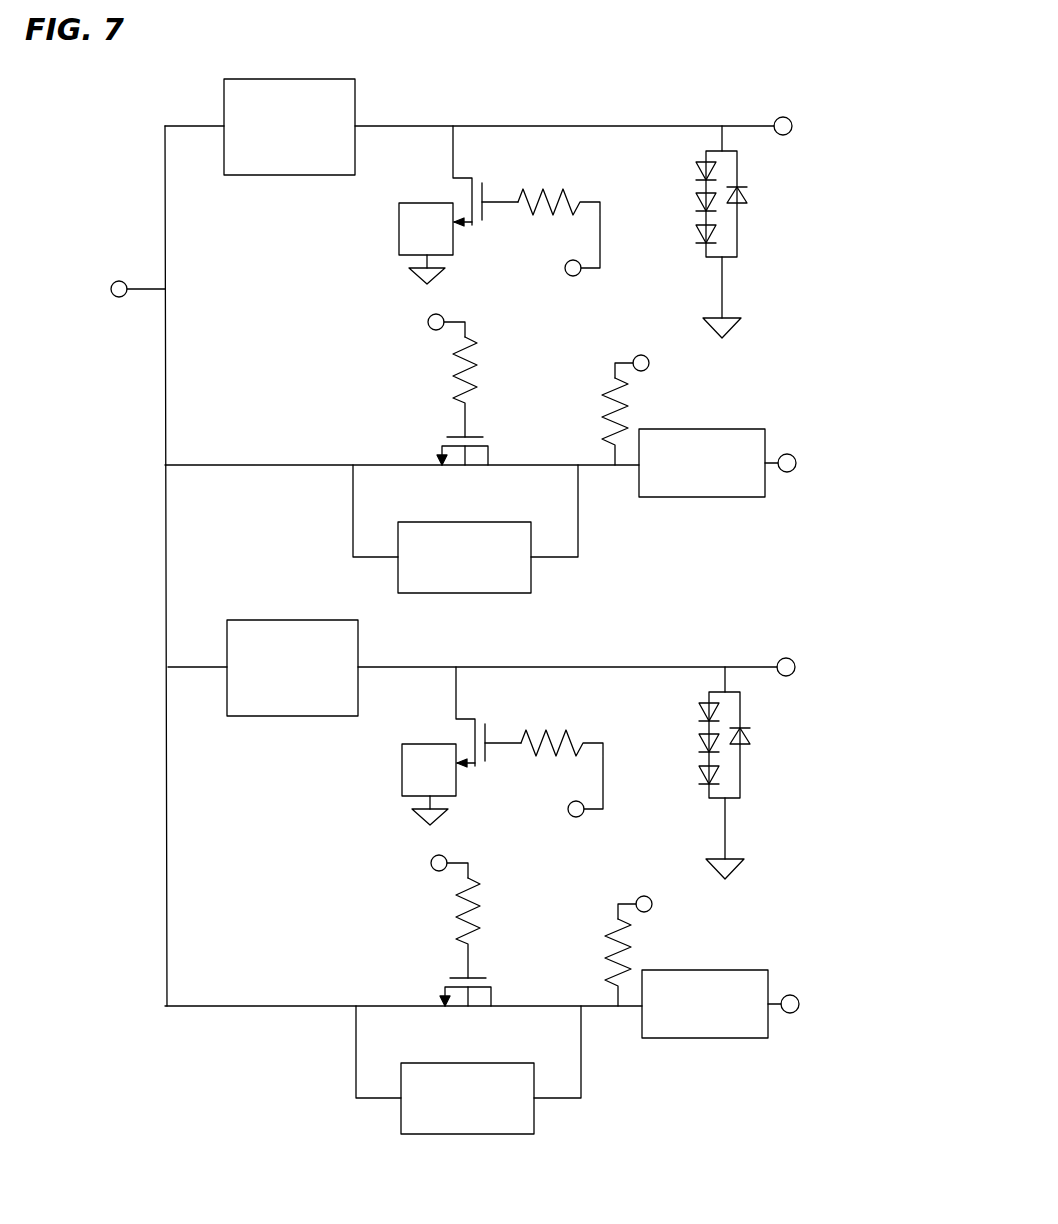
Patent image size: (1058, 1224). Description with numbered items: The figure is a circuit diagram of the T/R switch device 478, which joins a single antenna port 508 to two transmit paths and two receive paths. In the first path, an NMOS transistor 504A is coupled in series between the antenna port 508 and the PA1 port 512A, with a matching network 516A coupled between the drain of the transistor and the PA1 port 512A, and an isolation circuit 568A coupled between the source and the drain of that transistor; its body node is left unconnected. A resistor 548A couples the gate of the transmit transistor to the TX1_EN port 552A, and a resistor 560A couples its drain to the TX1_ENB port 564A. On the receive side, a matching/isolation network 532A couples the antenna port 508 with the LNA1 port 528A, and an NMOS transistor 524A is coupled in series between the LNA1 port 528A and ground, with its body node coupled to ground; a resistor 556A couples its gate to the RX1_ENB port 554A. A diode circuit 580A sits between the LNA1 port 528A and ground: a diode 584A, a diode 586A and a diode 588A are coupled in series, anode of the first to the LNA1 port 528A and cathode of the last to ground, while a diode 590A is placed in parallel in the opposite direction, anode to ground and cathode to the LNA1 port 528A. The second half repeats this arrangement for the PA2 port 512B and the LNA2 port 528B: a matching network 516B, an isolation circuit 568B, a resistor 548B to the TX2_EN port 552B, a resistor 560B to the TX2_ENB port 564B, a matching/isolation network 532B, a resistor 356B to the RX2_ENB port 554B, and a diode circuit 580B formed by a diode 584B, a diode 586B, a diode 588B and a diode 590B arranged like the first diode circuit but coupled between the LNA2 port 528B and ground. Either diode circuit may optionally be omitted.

The T/R switch device 478 is at (426, 66).
The antenna port 508 is at (98, 334).
The matching/isolation network 532A is at (290, 79).
The matching/isolation network 532B is at (472, 653).
The LNA1 port 528A is at (795, 88).
The LNA2 port 528B is at (825, 641).
The NMOS transistor 524A is at (465, 179).
The resistor 556A is at (573, 195).
The resistor 356B is at (588, 748).
The RX1_ENB port 554A is at (552, 249).
The RX2_ENB port 554B is at (538, 809).
The diode circuit 580A is at (729, 232).
The diode circuit 580B is at (732, 773).
The diode 584A is at (698, 170).
The diode 584B is at (674, 726).
The diode 586A is at (698, 202).
The diode 586B is at (674, 757).
The diode 588A is at (698, 235).
The diode 588B is at (674, 788).
The diode 590A is at (750, 197).
The diode 590B is at (782, 725).
The TX1_EN port 552A is at (412, 295).
The TX2_EN port 552B is at (393, 848).
The resistor 548A is at (455, 367).
The resistor 548B is at (424, 928).
The NMOS transistor 504A is at (480, 437).
The TX1_ENB port 564A is at (612, 346).
The TX2_ENB port 564B is at (643, 897).
The resistor 560A is at (623, 415).
The resistor 560B is at (661, 962).
The matching network 516A is at (700, 497).
The matching network 516B is at (703, 1032).
The PA1 port 512A is at (800, 425).
The PA2 port 512B is at (826, 976).
The isolation circuit 568A is at (465, 522).
The isolation circuit 568B is at (468, 1070).